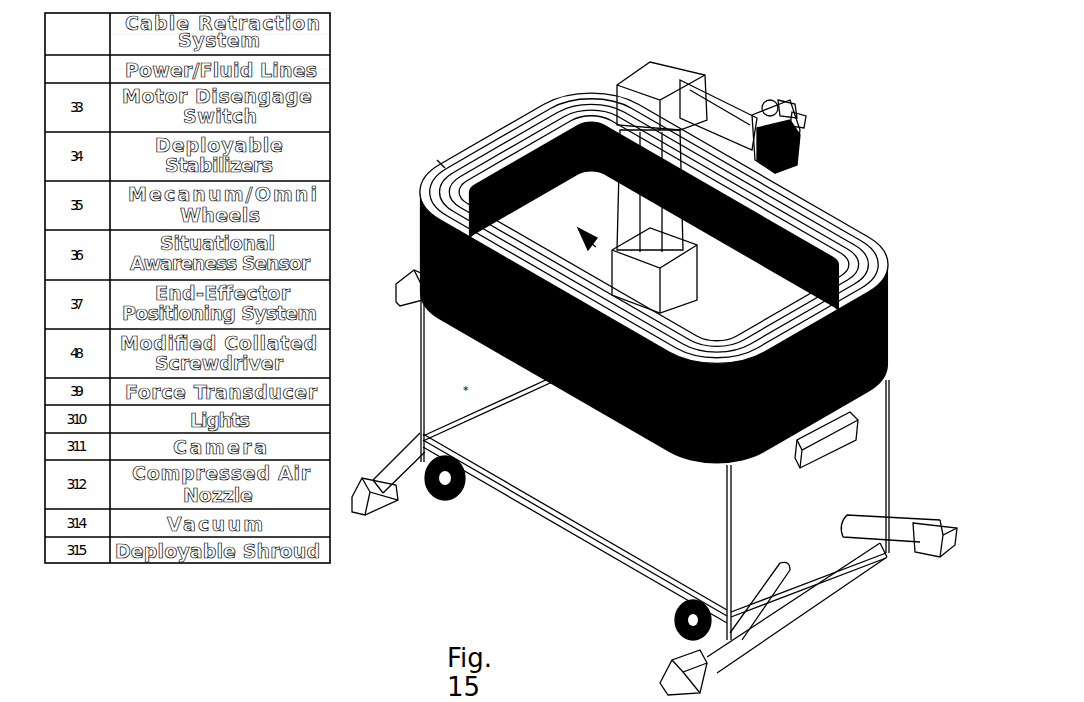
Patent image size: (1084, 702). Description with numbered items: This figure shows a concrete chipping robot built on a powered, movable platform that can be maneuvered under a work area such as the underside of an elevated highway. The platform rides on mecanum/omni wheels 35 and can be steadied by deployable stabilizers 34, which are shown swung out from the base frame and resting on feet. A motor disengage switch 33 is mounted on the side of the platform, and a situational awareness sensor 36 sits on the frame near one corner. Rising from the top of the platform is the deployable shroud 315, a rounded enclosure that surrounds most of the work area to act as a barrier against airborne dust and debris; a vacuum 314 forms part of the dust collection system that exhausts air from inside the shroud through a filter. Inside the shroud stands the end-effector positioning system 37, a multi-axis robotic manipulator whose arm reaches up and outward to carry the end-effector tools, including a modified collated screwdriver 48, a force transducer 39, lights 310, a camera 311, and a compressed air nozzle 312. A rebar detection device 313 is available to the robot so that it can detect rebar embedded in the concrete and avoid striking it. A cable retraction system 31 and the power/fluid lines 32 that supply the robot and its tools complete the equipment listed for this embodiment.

The cable retraction system 31 is at (199, 34).
The power/fluid lines 32 is at (199, 69).
The motor disengage switch 33 is at (405, 275).
The deployable stabilizers 34 is at (390, 440).
The mecanum/omni wheels 35 is at (437, 505).
The situational awareness sensor 36 is at (863, 412).
The end-effector positioning system 37 is at (640, 60).
The modified collated screwdriver 48 is at (793, 147).
The force transducer 39 is at (793, 103).
The lights 310 is at (800, 118).
The camera 311 is at (767, 103).
The compressed air nozzle 312 is at (760, 123).
The rebar detection device 313 is at (583, 237).
The vacuum 314 is at (437, 160).
The deployable shroud 315 is at (540, 317).